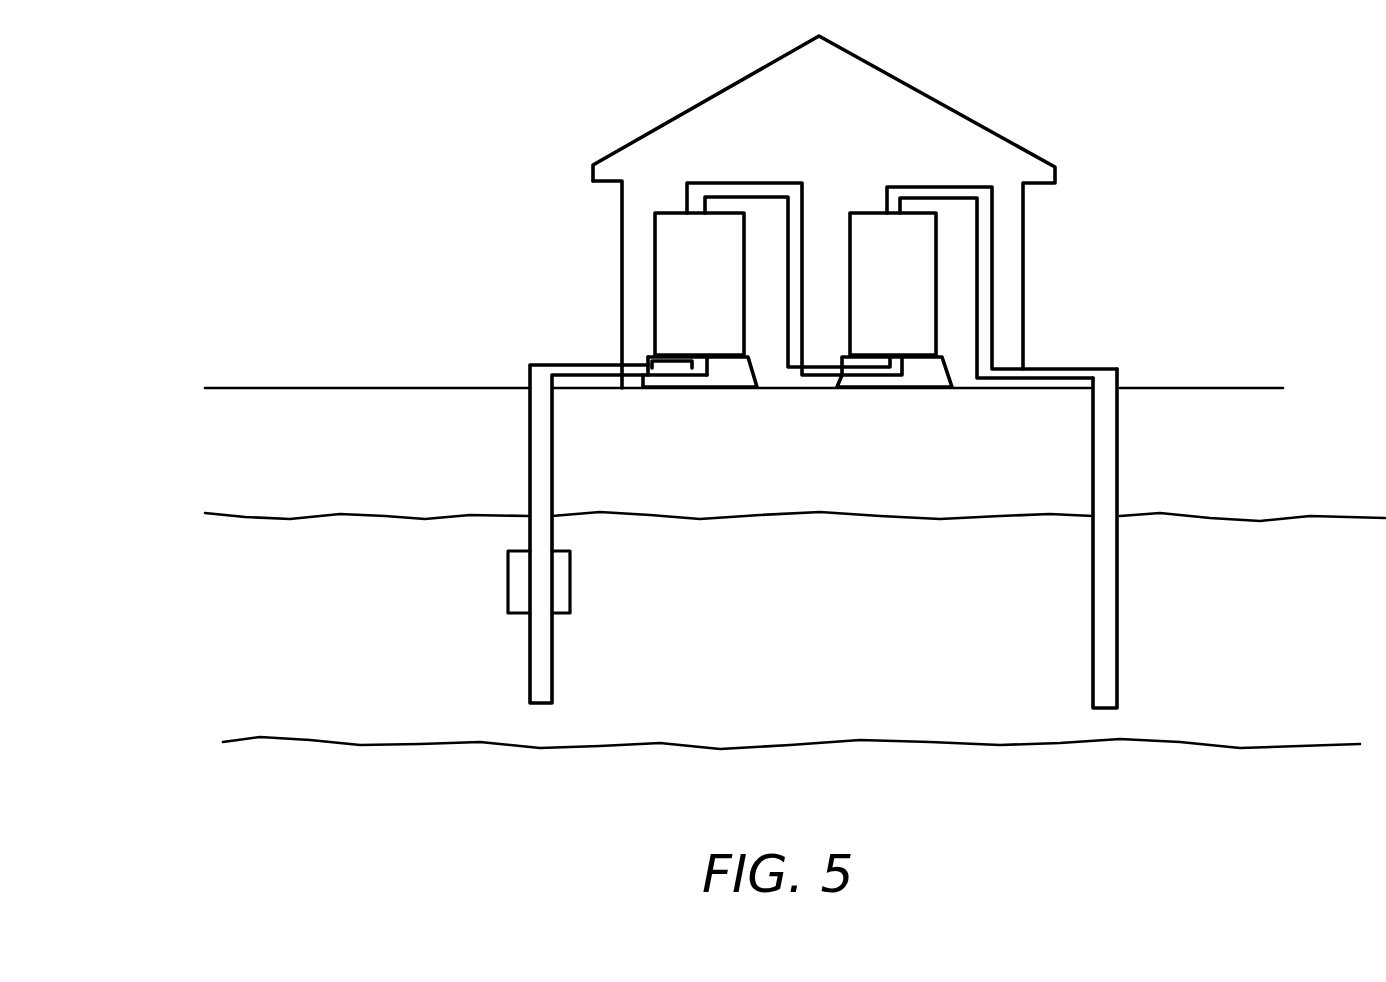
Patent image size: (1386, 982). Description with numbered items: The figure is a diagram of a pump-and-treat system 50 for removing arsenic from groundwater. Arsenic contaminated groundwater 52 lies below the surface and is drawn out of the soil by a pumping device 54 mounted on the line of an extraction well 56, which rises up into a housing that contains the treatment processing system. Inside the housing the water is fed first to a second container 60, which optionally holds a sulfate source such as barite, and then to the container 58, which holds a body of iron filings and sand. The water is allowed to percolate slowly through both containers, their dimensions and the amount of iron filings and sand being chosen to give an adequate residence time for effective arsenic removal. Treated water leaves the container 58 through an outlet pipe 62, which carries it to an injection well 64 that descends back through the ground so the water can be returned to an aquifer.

The pump-and-treat system 50 is at (535, 168).
The arsenic contaminated groundwater 52 is at (795, 630).
The pumping device 54 is at (508, 584).
The extraction well 56 is at (530, 452).
The container 58 is at (868, 212).
The second container 60 is at (672, 210).
The outlet pipe 62 is at (909, 187).
The injection well 64 is at (1120, 478).